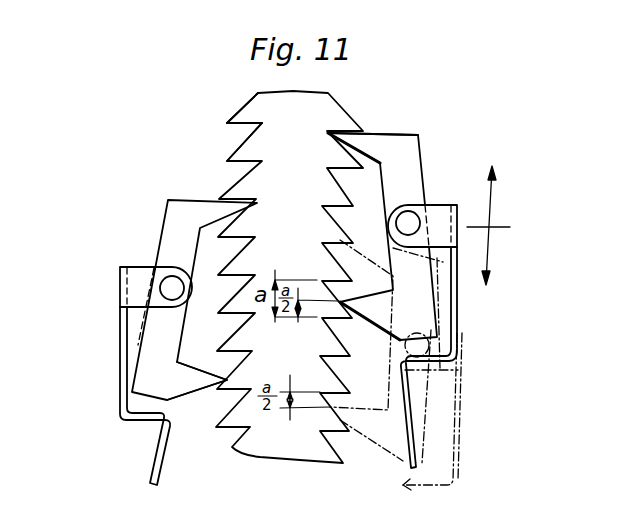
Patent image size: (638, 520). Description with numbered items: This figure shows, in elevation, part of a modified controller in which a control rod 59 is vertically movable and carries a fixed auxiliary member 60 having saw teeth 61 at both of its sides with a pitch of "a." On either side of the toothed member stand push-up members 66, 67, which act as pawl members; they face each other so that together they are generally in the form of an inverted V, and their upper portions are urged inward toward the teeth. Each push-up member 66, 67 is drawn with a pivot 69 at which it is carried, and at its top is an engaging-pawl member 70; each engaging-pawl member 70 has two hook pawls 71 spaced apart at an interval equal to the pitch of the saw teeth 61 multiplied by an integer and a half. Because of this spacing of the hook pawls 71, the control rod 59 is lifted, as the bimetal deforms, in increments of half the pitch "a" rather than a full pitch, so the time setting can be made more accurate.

The control rod 59 is at (335, 111).
The auxiliary member 60 is at (245, 109).
The saw teeth 61 is at (232, 127).
The push-up member 66 is at (121, 350).
The push-up member 67 is at (410, 415).
The pivot pin 69 is at (172, 284).
The engaging-pawl member 70 is at (168, 201).
The hook pawls 71 is at (367, 140).